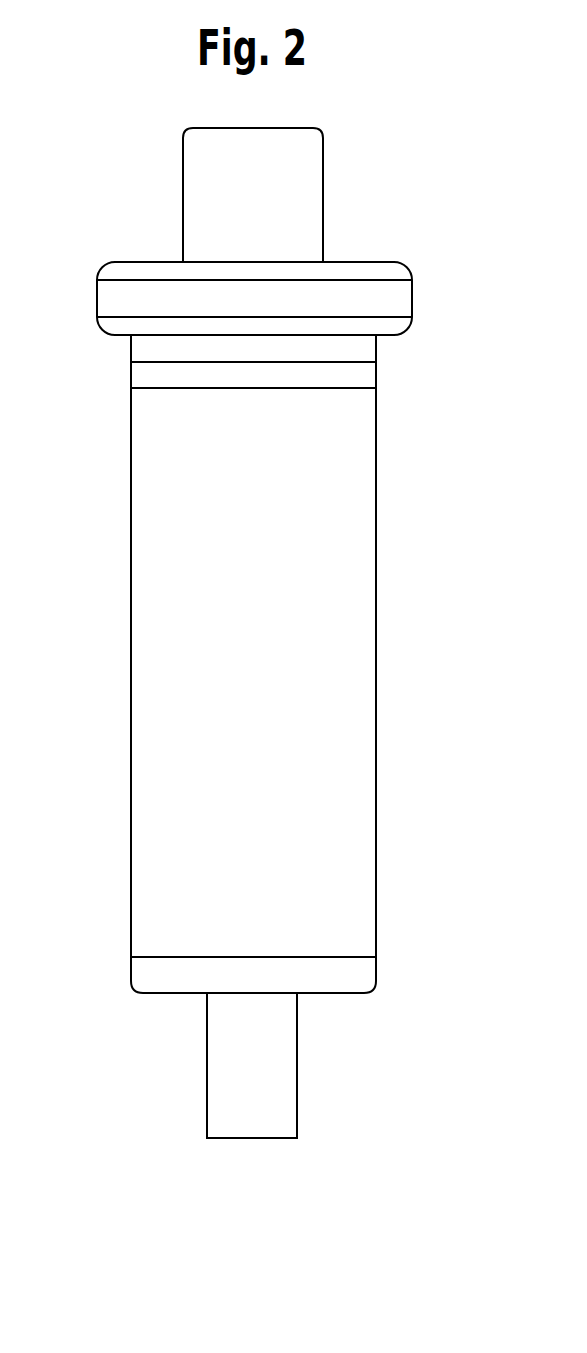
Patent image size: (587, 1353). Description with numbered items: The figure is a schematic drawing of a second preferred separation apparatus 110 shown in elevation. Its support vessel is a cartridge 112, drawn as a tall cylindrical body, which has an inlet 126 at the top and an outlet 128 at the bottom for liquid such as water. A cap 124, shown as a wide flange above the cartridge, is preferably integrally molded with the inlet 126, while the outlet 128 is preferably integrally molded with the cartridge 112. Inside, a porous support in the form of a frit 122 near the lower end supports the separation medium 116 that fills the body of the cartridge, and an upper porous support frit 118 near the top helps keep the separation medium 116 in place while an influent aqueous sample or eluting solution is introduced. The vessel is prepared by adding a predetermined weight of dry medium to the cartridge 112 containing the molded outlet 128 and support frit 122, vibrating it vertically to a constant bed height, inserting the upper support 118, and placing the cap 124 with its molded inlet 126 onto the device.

The separation apparatus 110 is at (46, 485).
The cartridge 112 is at (208, 206).
The separation medium 116 is at (170, 766).
The upper porous support frit 118 is at (195, 389).
The support frit 122 is at (172, 953).
The cap 124 is at (117, 299).
The inlet 126 is at (222, 127).
The outlet 128 is at (227, 1140).